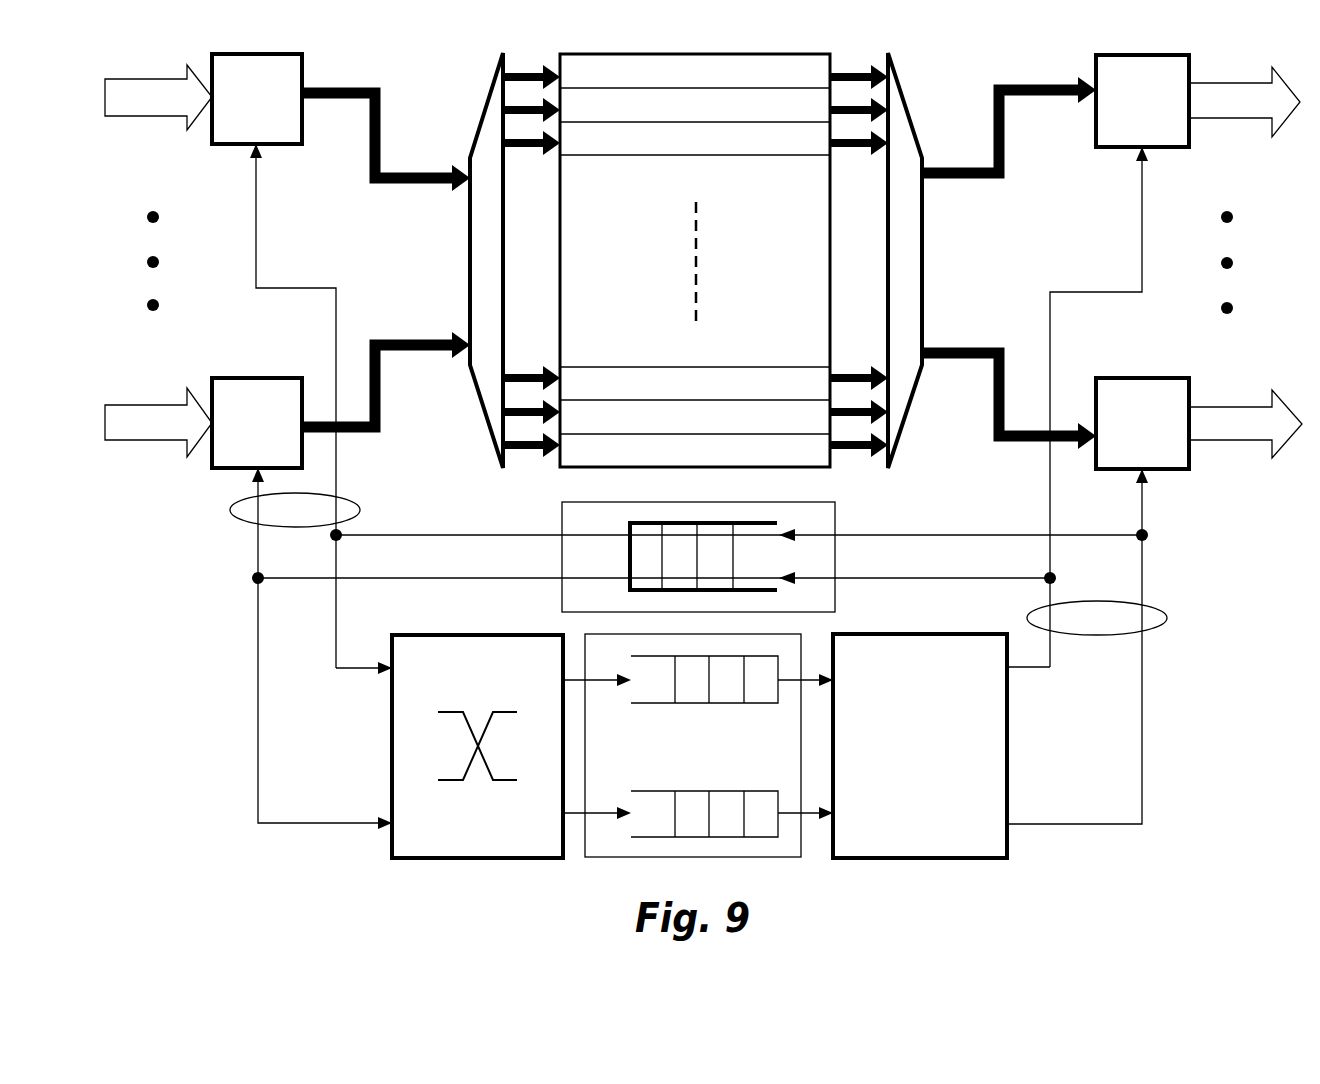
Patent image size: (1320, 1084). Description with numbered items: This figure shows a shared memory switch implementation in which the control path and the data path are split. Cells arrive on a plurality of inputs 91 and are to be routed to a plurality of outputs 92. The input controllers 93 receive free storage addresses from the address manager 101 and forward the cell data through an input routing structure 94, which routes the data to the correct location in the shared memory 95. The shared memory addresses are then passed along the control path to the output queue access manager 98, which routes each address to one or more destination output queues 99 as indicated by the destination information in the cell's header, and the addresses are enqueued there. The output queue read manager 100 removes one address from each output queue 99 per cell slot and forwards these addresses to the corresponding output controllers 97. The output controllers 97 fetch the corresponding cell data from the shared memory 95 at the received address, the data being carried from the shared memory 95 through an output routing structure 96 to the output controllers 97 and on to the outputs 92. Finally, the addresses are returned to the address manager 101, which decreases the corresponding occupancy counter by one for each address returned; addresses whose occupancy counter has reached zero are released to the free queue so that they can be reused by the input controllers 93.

The inputs 91 is at (162, 117).
The outputs 92 is at (1238, 120).
The input controllers 93 is at (257, 261).
The input routing structure 94 is at (485, 105).
The shared memory 95 is at (695, 260).
The output routing structure 96 is at (913, 122).
The output controllers 97 is at (1142, 262).
The output queue access manager 98 is at (511, 746).
The output queues 99 is at (709, 745).
The output queue read manager 100 is at (920, 746).
The address manager 101 is at (837, 513).